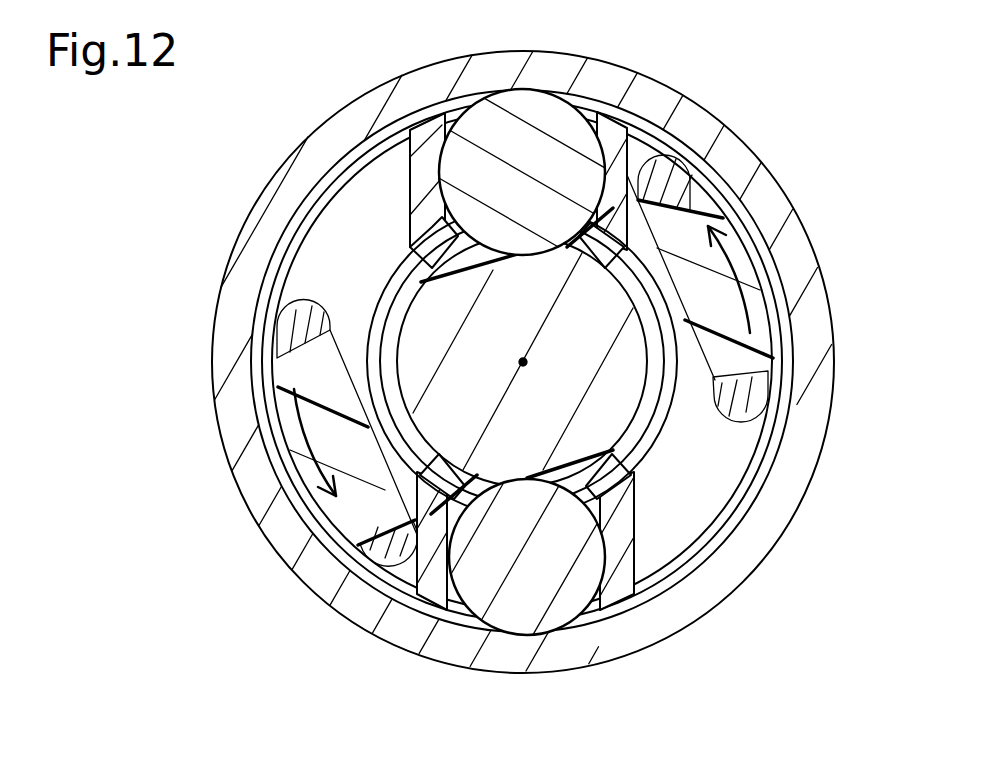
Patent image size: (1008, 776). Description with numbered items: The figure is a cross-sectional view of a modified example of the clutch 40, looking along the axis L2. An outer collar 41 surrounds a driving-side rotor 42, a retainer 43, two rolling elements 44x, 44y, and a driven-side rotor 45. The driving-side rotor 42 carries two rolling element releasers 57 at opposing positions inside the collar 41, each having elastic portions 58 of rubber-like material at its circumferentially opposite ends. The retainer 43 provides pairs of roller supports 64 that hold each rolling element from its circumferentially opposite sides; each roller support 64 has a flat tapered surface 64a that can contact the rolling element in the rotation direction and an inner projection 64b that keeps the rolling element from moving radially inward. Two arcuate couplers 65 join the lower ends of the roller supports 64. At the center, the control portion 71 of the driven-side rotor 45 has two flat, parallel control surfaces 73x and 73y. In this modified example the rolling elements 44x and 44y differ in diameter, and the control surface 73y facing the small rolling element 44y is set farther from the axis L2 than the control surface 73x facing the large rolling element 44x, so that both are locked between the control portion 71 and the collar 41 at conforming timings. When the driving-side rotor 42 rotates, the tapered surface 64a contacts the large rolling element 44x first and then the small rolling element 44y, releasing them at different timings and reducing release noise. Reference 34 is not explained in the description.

The clutch 40 is at (803, 105).
The collar 41 is at (820, 440).
The driving-side rotor 42 is at (704, 170).
The retainer 43 is at (715, 545).
The cam groove 34 is at (655, 312).
The driven-side rotor 45 is at (382, 458).
The rolling element releaser 57 is at (742, 258).
The elastic portion 58 is at (672, 150).
The roller support 64 is at (622, 158).
The tapered surface 64a is at (590, 150).
The inner projection 64b is at (440, 265).
The coupler 65 is at (317, 222).
The control portion 71 is at (410, 332).
The control surface 73x is at (498, 252).
The control surface 73y is at (535, 492).
The rolling element 44x is at (527, 263).
The rolling element 44y is at (527, 478).
The axis L2 is at (529, 361).